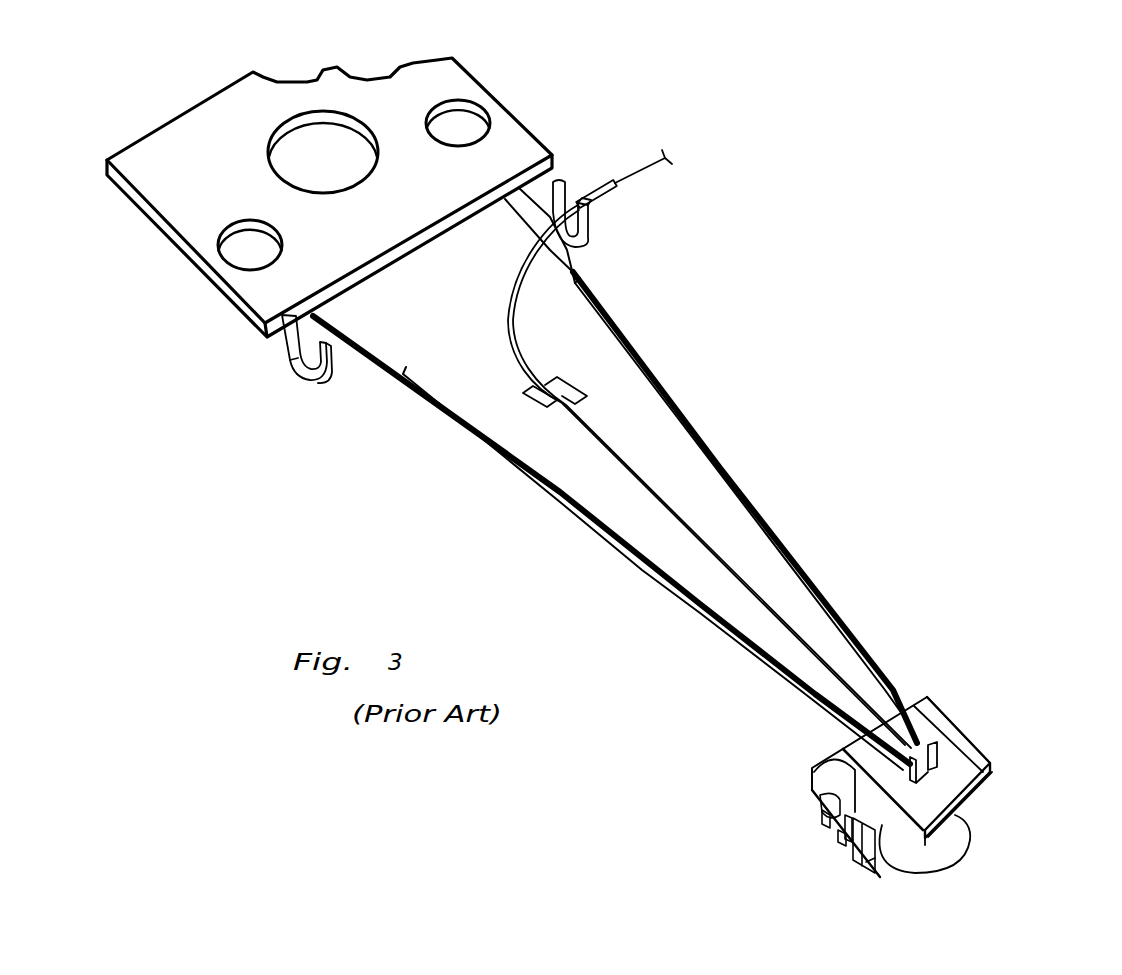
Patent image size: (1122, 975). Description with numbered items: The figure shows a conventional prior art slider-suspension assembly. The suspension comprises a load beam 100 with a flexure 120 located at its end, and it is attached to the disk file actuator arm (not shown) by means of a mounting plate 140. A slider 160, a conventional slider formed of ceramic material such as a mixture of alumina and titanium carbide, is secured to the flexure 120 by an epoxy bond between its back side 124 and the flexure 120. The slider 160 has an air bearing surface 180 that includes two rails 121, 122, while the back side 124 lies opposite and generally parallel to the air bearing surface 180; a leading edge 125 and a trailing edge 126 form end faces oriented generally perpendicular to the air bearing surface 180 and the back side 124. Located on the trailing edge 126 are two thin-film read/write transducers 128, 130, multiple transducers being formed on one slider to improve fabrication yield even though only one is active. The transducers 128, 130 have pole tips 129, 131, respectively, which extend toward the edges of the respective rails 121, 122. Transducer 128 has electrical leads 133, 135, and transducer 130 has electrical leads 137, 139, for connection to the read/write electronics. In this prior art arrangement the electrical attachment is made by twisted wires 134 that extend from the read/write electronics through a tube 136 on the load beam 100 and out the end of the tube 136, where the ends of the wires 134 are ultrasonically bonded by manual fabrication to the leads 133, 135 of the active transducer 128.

The load beam 100 is at (703, 497).
The flexure 120 is at (988, 766).
The rail 121 is at (980, 820).
The rail 122 is at (817, 827).
The back side 124 is at (960, 742).
The leading edge 125 is at (947, 713).
The trailing edge 126 is at (817, 787).
The thin-film read/write transducer 128 is at (887, 867).
The pole tip 129 is at (859, 880).
The thin-film read/write transducer 130 is at (813, 800).
The pole tip 131 is at (798, 823).
The electrical lead 133 is at (952, 852).
The twisted wires 134 is at (648, 166).
The electrical lead 135 is at (827, 842).
The tube 136 is at (623, 473).
The electrical lead 137 is at (833, 747).
The electrical lead 139 is at (817, 760).
The mounting plate 140 is at (470, 88).
The slider 160 is at (1014, 748).
The air bearing surface 180 is at (815, 847).